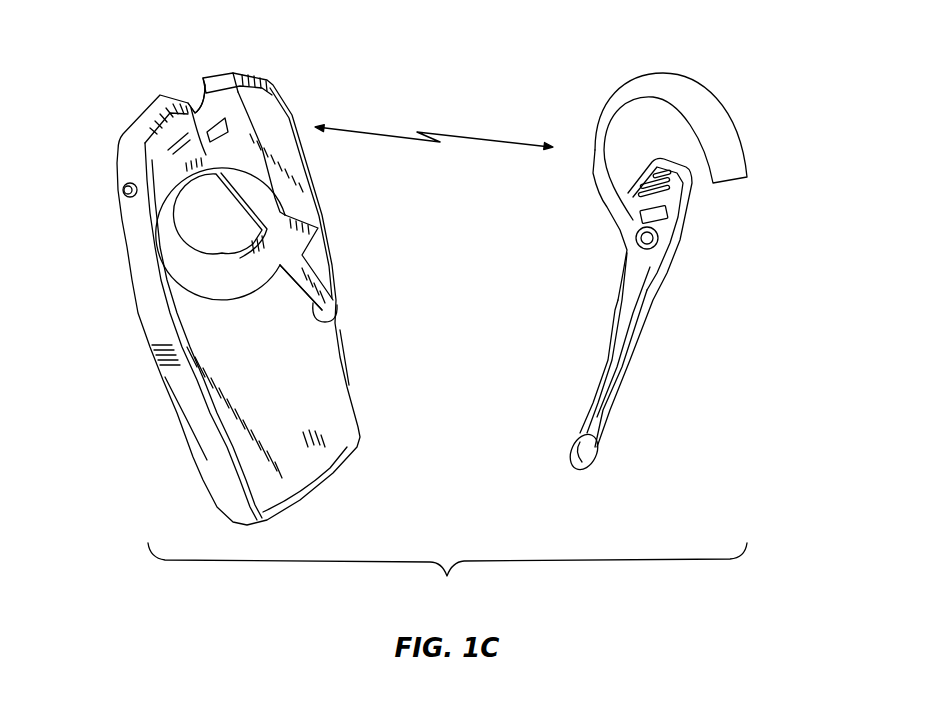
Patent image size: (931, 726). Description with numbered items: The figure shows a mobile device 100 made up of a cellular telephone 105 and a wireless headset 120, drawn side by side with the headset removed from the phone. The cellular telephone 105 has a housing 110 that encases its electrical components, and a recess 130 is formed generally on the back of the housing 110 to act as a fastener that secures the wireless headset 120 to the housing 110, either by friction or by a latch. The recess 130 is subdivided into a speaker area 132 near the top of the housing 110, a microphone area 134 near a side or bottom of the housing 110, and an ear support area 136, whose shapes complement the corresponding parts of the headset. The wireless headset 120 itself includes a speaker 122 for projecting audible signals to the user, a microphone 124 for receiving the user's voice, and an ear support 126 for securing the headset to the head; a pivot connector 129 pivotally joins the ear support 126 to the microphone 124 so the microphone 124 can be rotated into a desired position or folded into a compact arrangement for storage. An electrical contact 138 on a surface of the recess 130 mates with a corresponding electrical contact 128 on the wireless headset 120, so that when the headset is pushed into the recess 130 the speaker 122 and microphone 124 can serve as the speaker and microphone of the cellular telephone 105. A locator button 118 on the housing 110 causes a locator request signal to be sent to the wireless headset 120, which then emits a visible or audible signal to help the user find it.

The mobile device 100 is at (423, 311).
The cellular telephone 105 is at (238, 272).
The housing 110 is at (330, 423).
The locator button 118 is at (123, 190).
The wireless headset 120 is at (681, 281).
The speaker 122 is at (663, 180).
The microphone 124 is at (583, 452).
The ear support 126 is at (673, 87).
The electrical contact 128 is at (657, 218).
The pivot connector 129 is at (650, 240).
The recess 130 is at (263, 298).
The speaker area 132 is at (183, 85).
The microphone area 134 is at (333, 312).
The ear support area 136 is at (215, 270).
The electrical contact 138 is at (217, 133).